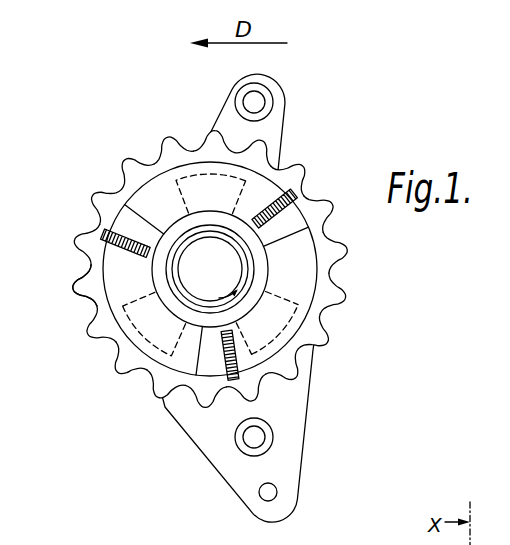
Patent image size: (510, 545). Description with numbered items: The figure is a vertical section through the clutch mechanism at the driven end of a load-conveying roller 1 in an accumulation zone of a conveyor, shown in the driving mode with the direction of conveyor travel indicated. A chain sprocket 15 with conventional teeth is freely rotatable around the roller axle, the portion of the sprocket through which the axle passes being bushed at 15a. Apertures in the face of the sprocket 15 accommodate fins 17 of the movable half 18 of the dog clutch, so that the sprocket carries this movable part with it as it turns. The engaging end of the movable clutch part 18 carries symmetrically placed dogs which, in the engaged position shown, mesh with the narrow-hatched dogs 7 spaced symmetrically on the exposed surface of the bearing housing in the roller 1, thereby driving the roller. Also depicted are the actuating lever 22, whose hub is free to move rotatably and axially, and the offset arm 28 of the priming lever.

The load-conveying roller 1 is at (143, 152).
The dogs 7 is at (105, 232).
The sprocket 15 is at (80, 293).
The bushing 15a is at (243, 297).
The fins 17 is at (246, 178).
The movable half of the dog clutch 18 is at (288, 223).
The actuating lever 22 is at (283, 392).
The offset arm 28 is at (272, 120).